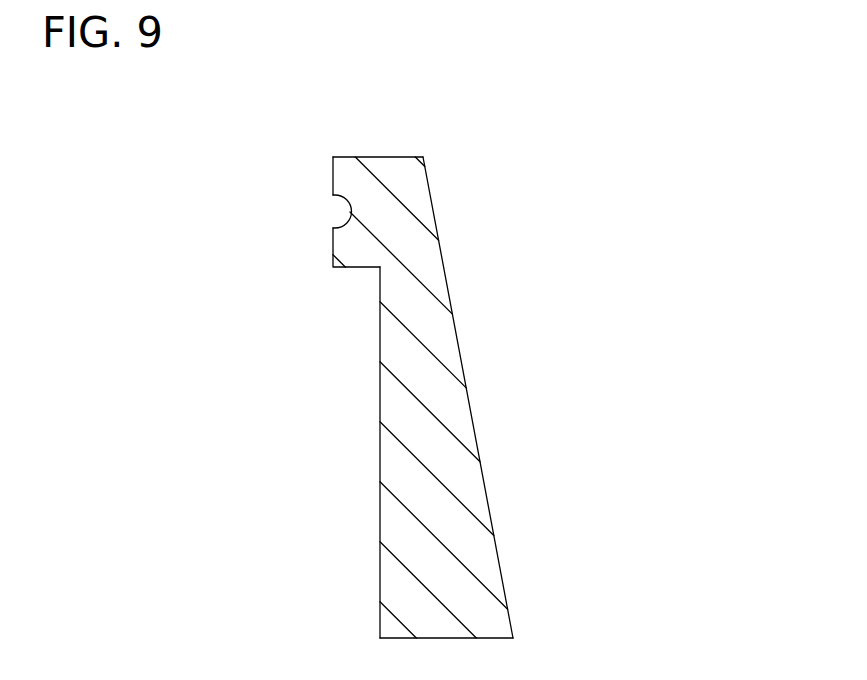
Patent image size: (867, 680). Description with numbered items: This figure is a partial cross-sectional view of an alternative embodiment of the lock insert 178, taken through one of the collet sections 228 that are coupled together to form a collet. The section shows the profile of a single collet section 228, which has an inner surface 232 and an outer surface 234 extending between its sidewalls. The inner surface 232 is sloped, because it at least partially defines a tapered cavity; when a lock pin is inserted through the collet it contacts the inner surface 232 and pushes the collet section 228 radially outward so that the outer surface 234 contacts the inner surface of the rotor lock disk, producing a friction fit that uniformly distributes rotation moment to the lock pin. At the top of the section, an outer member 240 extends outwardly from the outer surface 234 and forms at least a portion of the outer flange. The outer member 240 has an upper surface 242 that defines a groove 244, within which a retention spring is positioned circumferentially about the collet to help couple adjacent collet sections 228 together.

The lock insert 178 is at (270, 572).
The collet section 228 is at (414, 130).
The outer member 240 is at (333, 170).
The groove 244 is at (318, 212).
The upper surface 242 is at (333, 244).
The outer surface 234 is at (380, 397).
The inner surface 232 is at (475, 428).